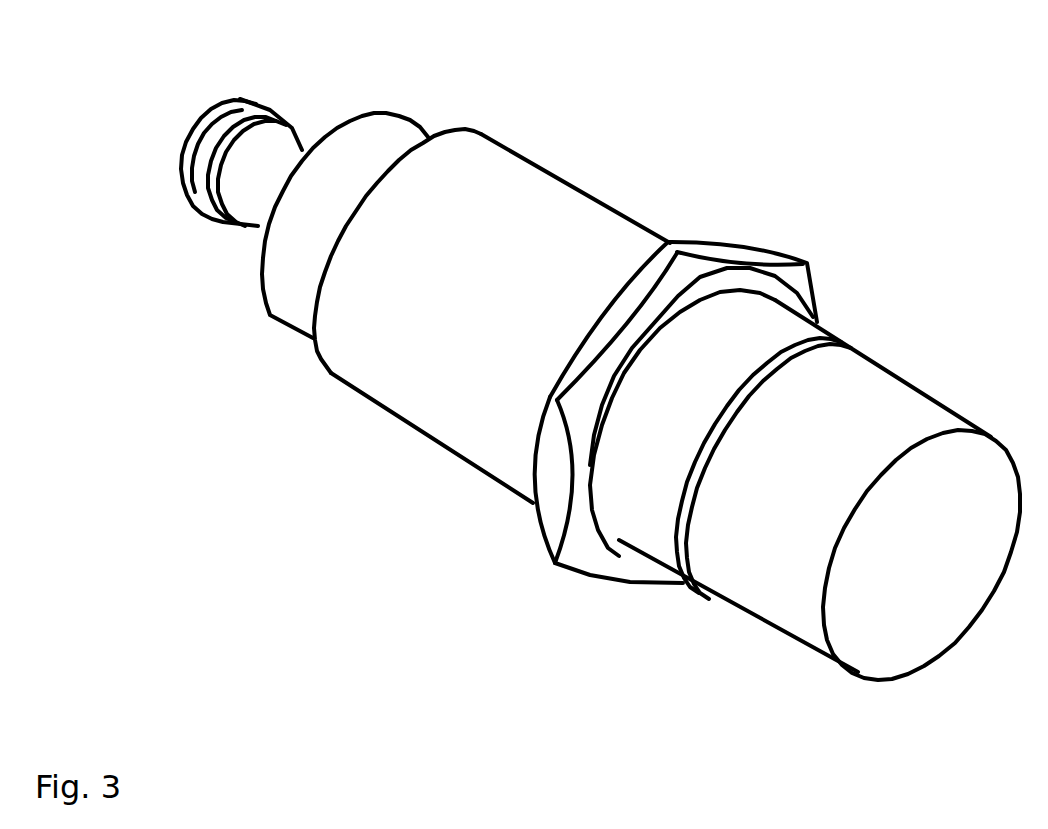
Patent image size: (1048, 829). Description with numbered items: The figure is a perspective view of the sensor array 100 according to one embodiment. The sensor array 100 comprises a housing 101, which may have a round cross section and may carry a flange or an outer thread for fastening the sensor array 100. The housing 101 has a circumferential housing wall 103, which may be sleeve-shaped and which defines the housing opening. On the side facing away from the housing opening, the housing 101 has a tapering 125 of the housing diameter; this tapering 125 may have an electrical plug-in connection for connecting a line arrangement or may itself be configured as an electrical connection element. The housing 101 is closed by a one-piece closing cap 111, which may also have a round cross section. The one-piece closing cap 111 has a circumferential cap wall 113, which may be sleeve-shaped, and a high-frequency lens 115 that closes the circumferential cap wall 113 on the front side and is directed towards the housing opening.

The sensor array 100 is at (488, 40).
The housing 101 is at (613, 177).
The circumferential housing wall 103 is at (427, 402).
The one-piece closing cap 111 is at (945, 360).
The circumferential cap wall 113 is at (762, 603).
The high-frequency lens 115 is at (938, 610).
The tapering 125 is at (202, 232).